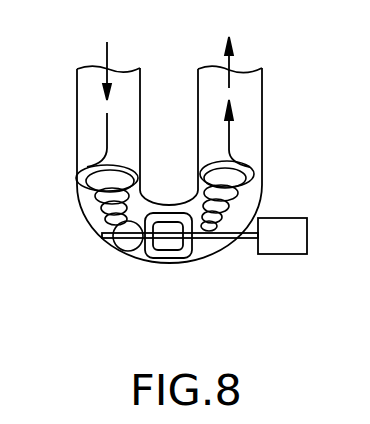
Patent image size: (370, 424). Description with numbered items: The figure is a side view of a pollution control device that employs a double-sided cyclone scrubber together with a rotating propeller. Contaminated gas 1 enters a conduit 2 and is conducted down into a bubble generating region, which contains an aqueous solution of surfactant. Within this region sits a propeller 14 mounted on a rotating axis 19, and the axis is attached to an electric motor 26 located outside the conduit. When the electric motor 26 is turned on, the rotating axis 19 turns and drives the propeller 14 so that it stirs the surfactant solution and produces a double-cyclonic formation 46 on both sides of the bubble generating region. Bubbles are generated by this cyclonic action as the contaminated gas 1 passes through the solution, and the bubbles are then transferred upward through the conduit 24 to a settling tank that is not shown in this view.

The contaminated gas 1 is at (107, 53).
The conduit 2 is at (137, 198).
The conduit 24 is at (250, 58).
The double-cyclonic formation 46 is at (268, 192).
The propeller 14 is at (162, 275).
The rotating axis 19 is at (242, 255).
The electric motor 26 is at (300, 260).